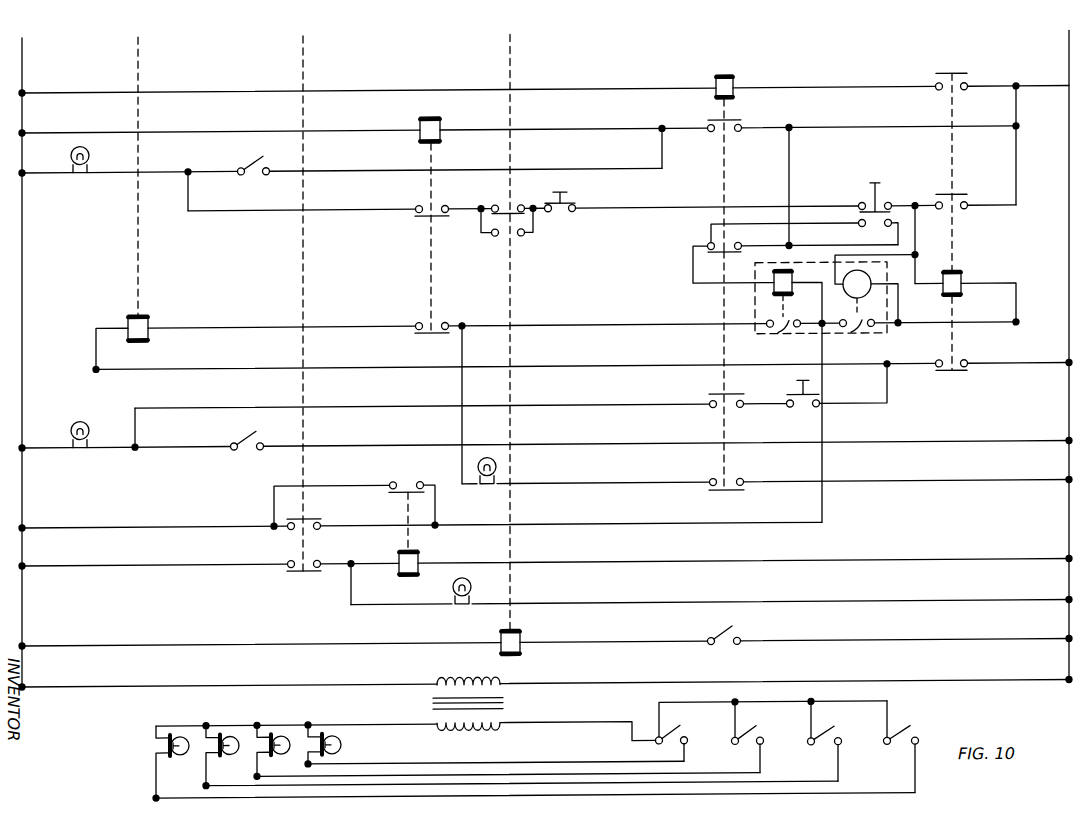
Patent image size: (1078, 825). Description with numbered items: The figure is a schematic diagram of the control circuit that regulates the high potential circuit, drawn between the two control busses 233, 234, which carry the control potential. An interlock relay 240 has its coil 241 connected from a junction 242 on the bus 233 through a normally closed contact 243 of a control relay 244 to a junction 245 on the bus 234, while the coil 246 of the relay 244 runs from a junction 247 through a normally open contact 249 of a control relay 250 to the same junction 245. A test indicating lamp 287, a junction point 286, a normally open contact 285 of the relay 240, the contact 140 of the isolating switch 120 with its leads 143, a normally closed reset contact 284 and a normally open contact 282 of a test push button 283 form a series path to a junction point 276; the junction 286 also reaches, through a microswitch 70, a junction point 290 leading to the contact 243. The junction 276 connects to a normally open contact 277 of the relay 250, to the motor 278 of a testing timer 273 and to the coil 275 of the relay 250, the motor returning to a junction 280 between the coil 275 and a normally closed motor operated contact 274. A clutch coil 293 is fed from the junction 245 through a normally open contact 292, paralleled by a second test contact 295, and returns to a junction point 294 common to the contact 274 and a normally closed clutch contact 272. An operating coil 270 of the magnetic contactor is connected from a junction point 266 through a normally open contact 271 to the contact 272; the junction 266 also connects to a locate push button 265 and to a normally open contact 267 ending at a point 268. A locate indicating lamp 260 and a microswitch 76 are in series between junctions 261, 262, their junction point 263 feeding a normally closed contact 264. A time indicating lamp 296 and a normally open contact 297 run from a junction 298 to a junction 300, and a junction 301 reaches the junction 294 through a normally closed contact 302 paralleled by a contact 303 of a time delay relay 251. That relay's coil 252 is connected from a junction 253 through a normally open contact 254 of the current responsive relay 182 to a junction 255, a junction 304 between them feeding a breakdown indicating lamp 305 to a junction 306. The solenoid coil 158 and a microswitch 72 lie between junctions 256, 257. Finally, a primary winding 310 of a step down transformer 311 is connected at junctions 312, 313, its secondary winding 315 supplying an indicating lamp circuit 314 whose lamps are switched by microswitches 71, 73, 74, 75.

The control bus 233 is at (24, 51).
The control bus 234 is at (1067, 46).
The junction 247 is at (24, 93).
The coil 246 is at (734, 90).
The control relay 244 is at (722, 165).
The normally open contact 249 is at (943, 74).
The junction 245 is at (1063, 91).
The junction 242 is at (24, 133).
The coil 241 is at (421, 128).
The interlock relay 240 is at (424, 274).
The isolating switch 120 is at (504, 63).
The junction point 290 is at (663, 130).
The normally closed contact 243 is at (727, 126).
The test indicating lamp 287 is at (90, 158).
The junction point 286 is at (188, 171).
The microswitch 70 is at (262, 168).
The normally open contact 285 is at (422, 224).
The contact 140 is at (507, 207).
The switch contacts 143 is at (481, 238).
The normally closed contact 284 is at (570, 206).
The normally open contact 282 is at (861, 204).
The test push button 283 is at (875, 186).
The junction point 276 is at (916, 207).
The normally open contact 277 is at (958, 201).
The control relay 250 is at (956, 248).
The normally open contact 295 is at (875, 232).
The normally open contact 292 is at (700, 262).
The testing timer 273 is at (751, 300).
The clutch coil 293 is at (800, 292).
The motor 278 is at (872, 293).
The coil 275 is at (962, 293).
The operating coil 270 is at (147, 338).
The normally open contact 271 is at (421, 340).
The junction 298 is at (464, 326).
The clutch contact 272 is at (783, 334).
The junction point 294 is at (824, 332).
The motor operated contact 274 is at (864, 334).
The junction 280 is at (900, 331).
The point 268 is at (1067, 374).
The normally open contact 267 is at (950, 380).
The junction point 266 is at (887, 374).
The normally closed contact 264 is at (716, 414).
The locate push button 265 is at (796, 387).
The junction 262 is at (1067, 446).
The junction 261 is at (24, 452).
The locate indicating lamp 260 is at (80, 422).
The junction point 263 is at (137, 452).
The microswitch 76 is at (246, 443).
The junction 300 is at (1067, 486).
The time indicating lamp 296 is at (498, 471).
The normally open contact 297 is at (712, 494).
The normally closed contact 303 is at (406, 484).
The time delay relay 251 is at (402, 500).
The junction 301 is at (24, 527).
The normally closed contact 302 is at (310, 525).
The current responsive relay 182 is at (302, 551).
The junction 253 is at (1067, 563).
The junction 255 is at (24, 569).
The normally open contact 254 is at (303, 580).
The junction 304 is at (351, 565).
The operating coil 252 is at (420, 568).
The junction 306 is at (1067, 606).
The breakdown indicating lamp 305 is at (476, 593).
The junction 256 is at (24, 647).
The relay coil 158 is at (522, 641).
The junction 257 is at (1067, 645).
The microswitch 72 is at (728, 640).
The junction 312 is at (24, 687).
The junction 313 is at (1067, 686).
The primary winding 310 is at (453, 681).
The step down transformer 311 is at (515, 711).
The secondary winding 315 is at (492, 734).
The indicating lamp circuit 314 is at (150, 750).
The microswitch 75 is at (678, 736).
The microswitch 74 is at (756, 736).
The microswitch 73 is at (834, 736).
The microswitch 71 is at (910, 736).